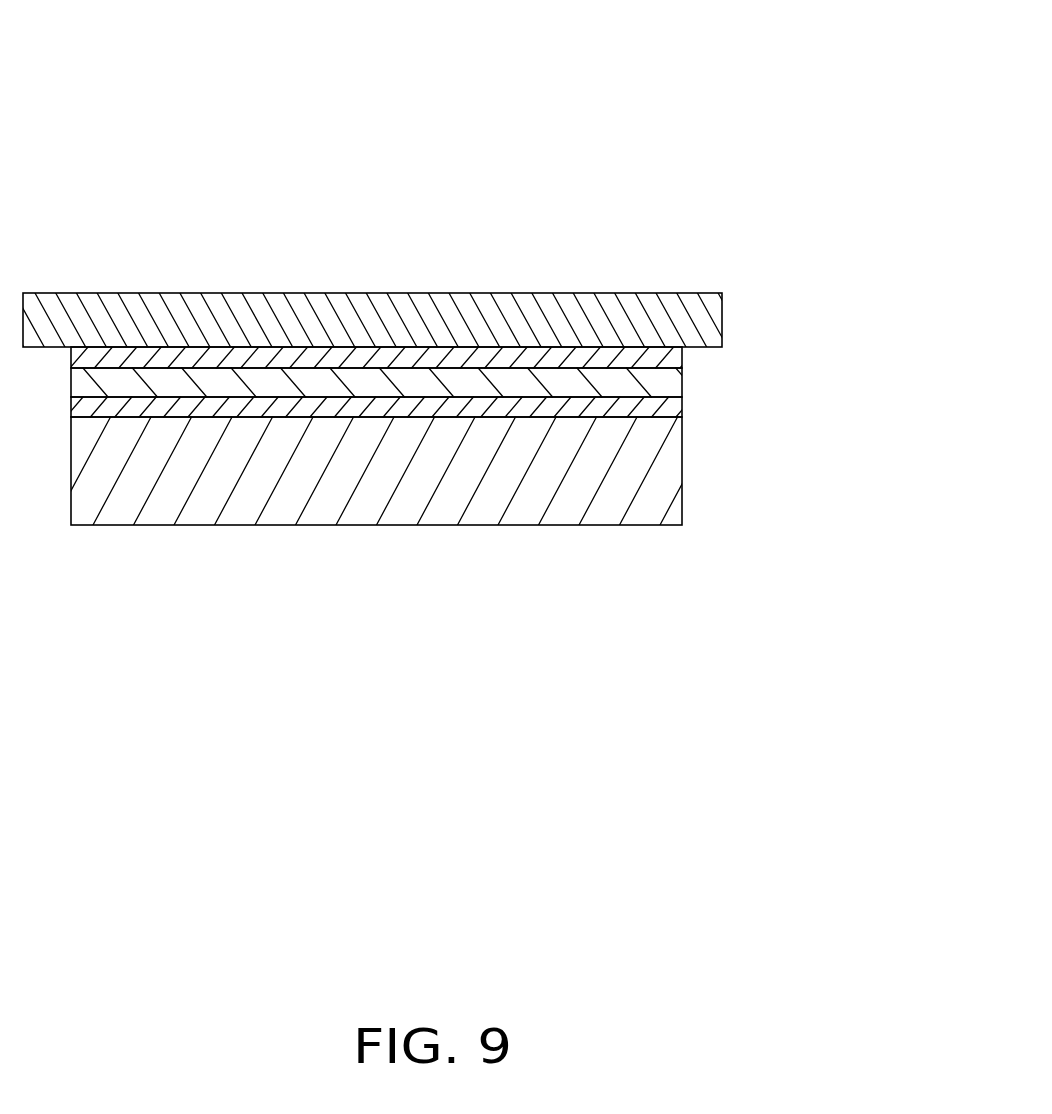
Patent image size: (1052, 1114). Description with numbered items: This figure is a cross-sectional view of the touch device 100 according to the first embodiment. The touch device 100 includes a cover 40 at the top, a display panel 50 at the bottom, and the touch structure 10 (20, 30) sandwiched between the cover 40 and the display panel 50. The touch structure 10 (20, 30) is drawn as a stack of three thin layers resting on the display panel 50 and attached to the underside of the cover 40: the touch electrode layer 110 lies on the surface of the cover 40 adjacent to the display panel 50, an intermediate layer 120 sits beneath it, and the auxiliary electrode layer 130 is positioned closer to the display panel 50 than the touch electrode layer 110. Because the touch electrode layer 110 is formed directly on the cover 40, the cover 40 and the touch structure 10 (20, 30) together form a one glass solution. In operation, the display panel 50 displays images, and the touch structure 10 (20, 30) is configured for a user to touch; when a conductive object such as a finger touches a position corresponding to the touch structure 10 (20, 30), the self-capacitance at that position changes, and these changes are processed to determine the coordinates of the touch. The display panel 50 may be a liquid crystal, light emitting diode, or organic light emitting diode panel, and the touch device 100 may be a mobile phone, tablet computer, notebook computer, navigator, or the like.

The touch device 100 is at (413, 78).
The cover 40 is at (705, 323).
The touch structure 10 is at (473, 396).
The touch structure 20 is at (400, 396).
The touch structure 30 is at (400, 396).
The touch electrode layer 110 is at (672, 353).
The second layer 120 is at (669, 377).
The auxiliary electrode layer 130 is at (677, 410).
The display panel 50 is at (665, 477).